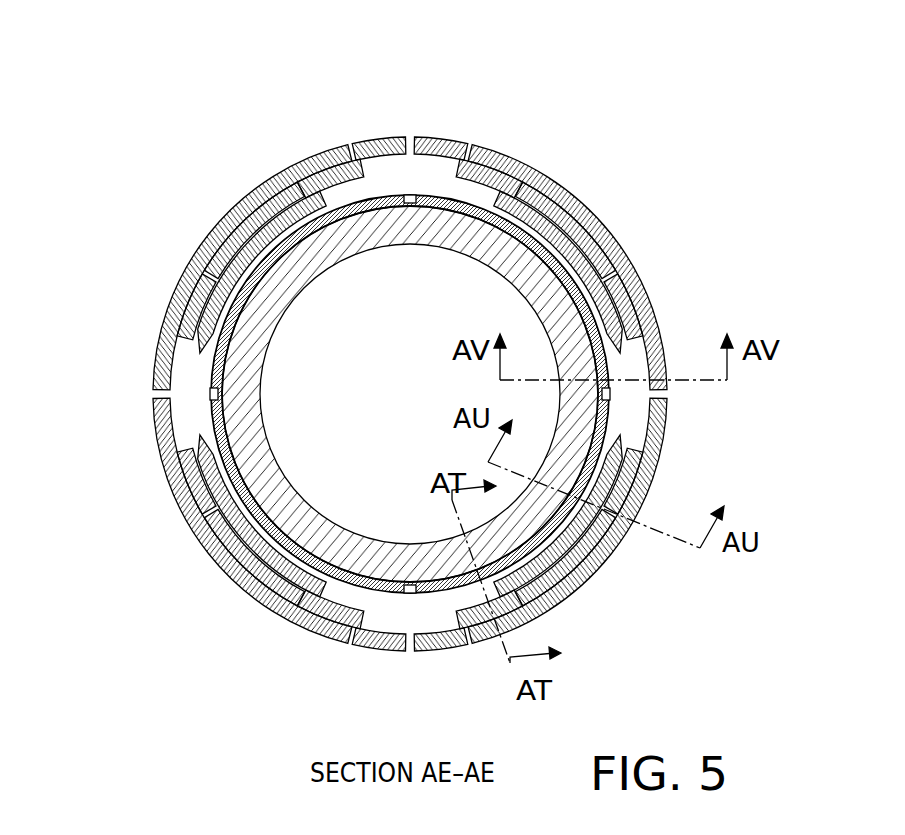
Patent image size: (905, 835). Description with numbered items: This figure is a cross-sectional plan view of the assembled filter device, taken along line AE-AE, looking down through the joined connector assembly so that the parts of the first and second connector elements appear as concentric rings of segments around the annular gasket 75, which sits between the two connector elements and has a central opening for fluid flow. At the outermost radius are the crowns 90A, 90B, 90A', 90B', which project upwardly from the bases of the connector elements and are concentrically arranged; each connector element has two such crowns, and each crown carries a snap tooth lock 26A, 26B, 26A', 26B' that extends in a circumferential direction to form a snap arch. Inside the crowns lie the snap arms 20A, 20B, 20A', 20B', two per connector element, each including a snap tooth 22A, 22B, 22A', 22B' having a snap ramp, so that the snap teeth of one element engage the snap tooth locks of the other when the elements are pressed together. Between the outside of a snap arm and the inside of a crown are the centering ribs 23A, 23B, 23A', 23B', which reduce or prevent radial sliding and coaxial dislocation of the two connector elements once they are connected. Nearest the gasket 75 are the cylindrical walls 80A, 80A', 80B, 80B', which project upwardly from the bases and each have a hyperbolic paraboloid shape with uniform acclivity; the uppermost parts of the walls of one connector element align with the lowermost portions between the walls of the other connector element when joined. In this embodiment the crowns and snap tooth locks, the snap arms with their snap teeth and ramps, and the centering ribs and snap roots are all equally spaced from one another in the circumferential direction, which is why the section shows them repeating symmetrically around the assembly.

The annular gasket 75 is at (300, 395).
The crown 90A is at (661, 520).
The crown 90B is at (190, 520).
The crown 90A' is at (195, 267).
The crown 90B' is at (612, 267).
The snap tooth lock 26A is at (441, 679).
The snap tooth lock 26B is at (368, 673).
The snap tooth lock 26A' is at (369, 93).
The snap tooth lock 26B' is at (442, 95).
The snap tooth 22A is at (282, 645).
The snap tooth 22B is at (558, 632).
The snap tooth 22A' is at (496, 129).
The snap tooth 22B' is at (323, 134).
The snap arm 20A is at (215, 563).
The snap arm 20B is at (631, 560).
The snap arm 20A' is at (588, 195).
The snap arm 20B' is at (254, 182).
The centering rib 23A is at (142, 492).
The centering rib 23B is at (678, 488).
The centering rib 23A' is at (652, 256).
The centering rib 23B' is at (173, 261).
The wall 80A is at (233, 548).
The wall 80B is at (578, 528).
The wall 80A' is at (630, 272).
The wall 80B' is at (259, 249).